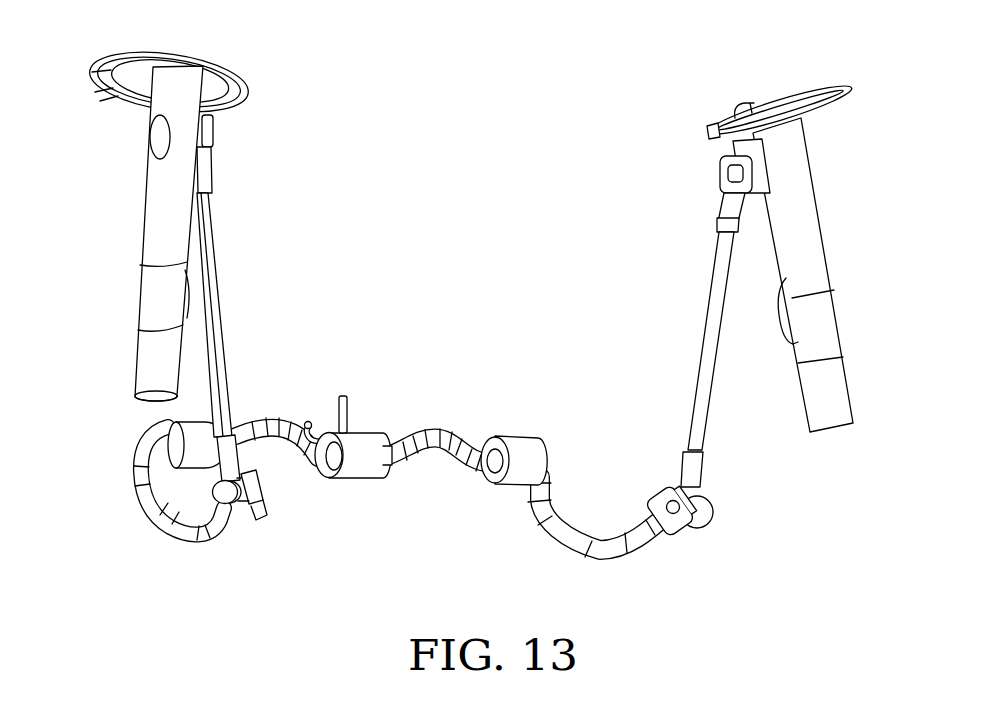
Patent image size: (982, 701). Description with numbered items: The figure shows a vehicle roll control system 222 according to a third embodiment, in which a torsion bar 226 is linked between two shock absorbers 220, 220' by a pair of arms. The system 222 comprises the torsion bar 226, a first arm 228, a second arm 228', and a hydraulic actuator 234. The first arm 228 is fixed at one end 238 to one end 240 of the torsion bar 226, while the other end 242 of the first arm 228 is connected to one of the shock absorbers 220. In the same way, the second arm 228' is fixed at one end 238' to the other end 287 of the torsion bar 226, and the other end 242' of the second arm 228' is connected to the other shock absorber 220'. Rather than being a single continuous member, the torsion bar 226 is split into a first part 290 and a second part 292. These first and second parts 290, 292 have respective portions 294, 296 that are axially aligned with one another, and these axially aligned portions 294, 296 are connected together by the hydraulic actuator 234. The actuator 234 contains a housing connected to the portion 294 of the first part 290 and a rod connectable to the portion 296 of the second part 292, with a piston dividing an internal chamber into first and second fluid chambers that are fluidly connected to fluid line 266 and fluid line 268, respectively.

The shock absorber 220 is at (142, 222).
The shock absorber 220' is at (797, 255).
The vehicle roll control system 222 is at (461, 374).
The torsion bar 226 is at (431, 447).
The first arm 228 is at (263, 337).
The second arm 228' is at (746, 352).
The hydraulic actuator 234 is at (368, 482).
The one end of the first arm 238 is at (159, 485).
The one end of the second arm 238' is at (746, 529).
The one end of the torsion bar 240 is at (253, 507).
The other end of the first arm 242 is at (258, 149).
The other end of the second arm 242' is at (686, 180).
The fluid line 266 is at (318, 432).
The fluid line 268 is at (345, 407).
The other end of the torsion bar 287 is at (673, 530).
The first part of the torsion bar 290 is at (268, 422).
The second part of the torsion bar 292 is at (533, 527).
The portion of the first part 294 is at (325, 458).
The portion of the second part 296 is at (400, 445).